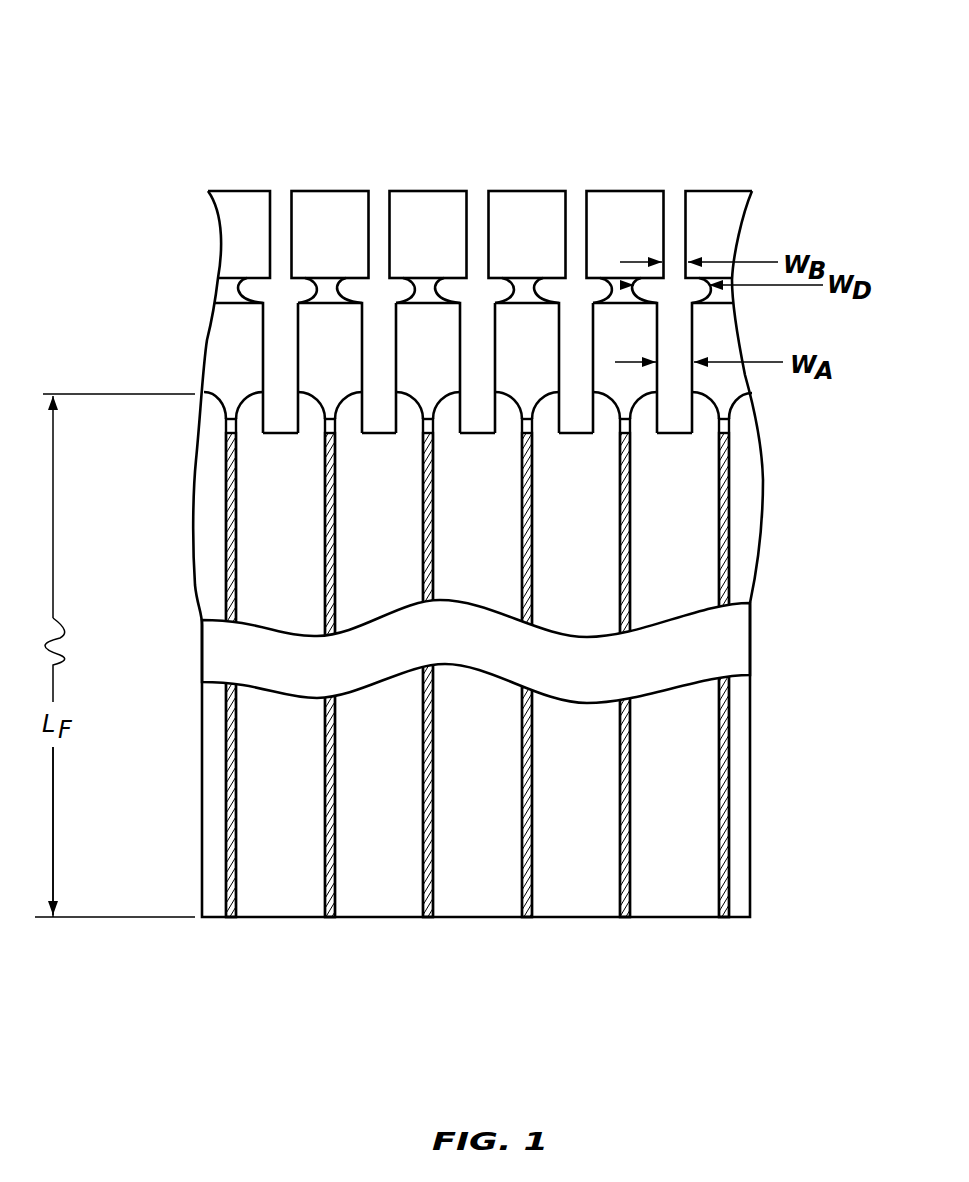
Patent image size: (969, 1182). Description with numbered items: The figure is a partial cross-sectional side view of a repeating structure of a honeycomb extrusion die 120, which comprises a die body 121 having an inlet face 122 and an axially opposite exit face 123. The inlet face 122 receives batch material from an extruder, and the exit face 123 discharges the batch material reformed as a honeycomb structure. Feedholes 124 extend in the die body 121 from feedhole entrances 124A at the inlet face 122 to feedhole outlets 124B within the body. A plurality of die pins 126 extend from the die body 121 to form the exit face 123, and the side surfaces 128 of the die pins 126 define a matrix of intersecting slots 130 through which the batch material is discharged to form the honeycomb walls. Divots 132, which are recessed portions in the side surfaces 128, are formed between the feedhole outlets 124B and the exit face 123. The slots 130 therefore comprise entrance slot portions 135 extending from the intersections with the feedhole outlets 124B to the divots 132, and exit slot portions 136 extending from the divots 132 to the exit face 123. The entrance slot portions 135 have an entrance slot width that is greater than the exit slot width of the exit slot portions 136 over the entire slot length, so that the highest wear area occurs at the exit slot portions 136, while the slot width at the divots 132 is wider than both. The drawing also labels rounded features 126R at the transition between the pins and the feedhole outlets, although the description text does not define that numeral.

The honeycomb extrusion die 120 is at (283, 70).
The die body 121 is at (199, 598).
The inlet face 122 is at (725, 920).
The exit face 123 is at (712, 189).
The feedholes 124 is at (403, 801).
The feedhole entrances 124A is at (276, 922).
The feedhole outlets 124B is at (261, 433).
The die pins 126 is at (268, 249).
The rounded corner of fin top 126R is at (359, 390).
The side surfaces 128 is at (291, 190).
The slots 130 is at (278, 189).
The divots 132 is at (243, 289).
The entrance slot portions 135 is at (694, 333).
The exit slot portions 136 is at (687, 207).